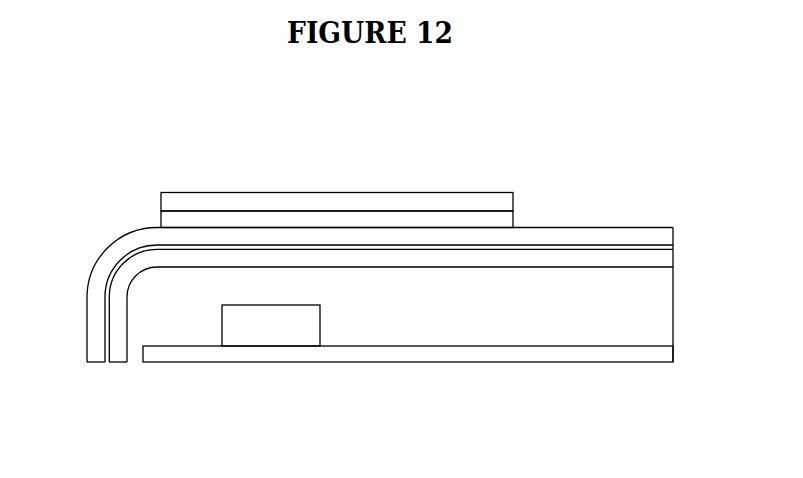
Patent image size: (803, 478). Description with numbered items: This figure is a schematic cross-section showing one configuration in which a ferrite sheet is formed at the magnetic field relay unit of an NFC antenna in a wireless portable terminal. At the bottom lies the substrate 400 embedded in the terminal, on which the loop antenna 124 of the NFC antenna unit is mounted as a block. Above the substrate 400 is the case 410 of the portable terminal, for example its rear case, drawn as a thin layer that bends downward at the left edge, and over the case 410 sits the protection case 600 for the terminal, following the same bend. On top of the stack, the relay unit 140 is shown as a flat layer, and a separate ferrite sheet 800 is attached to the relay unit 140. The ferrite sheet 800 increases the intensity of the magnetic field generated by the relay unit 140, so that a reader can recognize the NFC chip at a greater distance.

The relay unit 140 is at (307, 197).
The ferrite sheet 800 is at (167, 222).
The protection case 600 is at (632, 235).
The case 410 is at (562, 257).
The loop antenna 124 is at (268, 332).
The substrate 400 is at (475, 353).